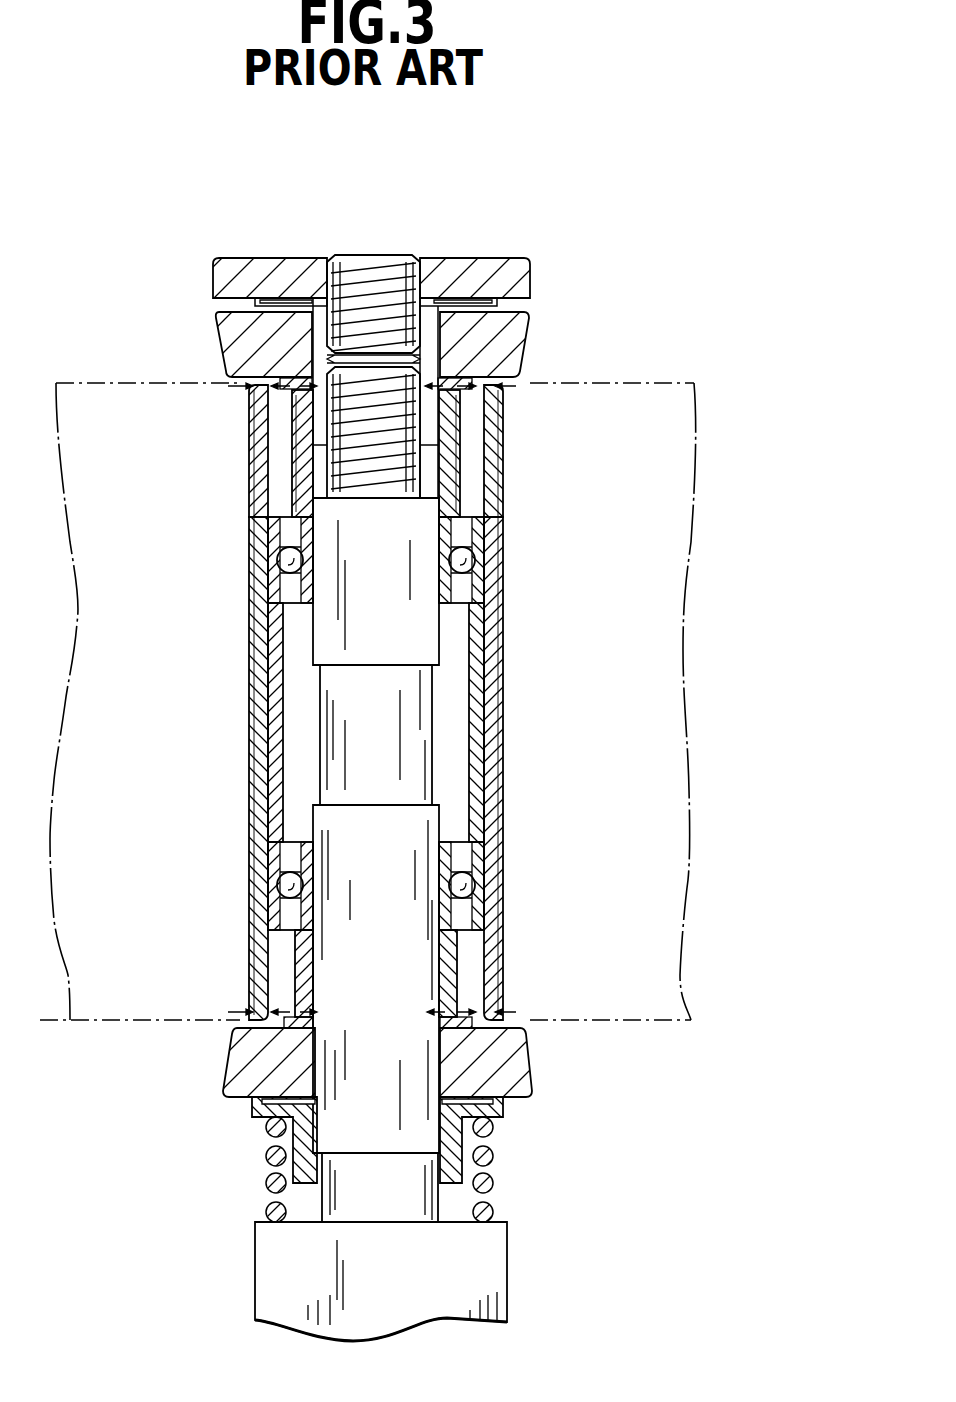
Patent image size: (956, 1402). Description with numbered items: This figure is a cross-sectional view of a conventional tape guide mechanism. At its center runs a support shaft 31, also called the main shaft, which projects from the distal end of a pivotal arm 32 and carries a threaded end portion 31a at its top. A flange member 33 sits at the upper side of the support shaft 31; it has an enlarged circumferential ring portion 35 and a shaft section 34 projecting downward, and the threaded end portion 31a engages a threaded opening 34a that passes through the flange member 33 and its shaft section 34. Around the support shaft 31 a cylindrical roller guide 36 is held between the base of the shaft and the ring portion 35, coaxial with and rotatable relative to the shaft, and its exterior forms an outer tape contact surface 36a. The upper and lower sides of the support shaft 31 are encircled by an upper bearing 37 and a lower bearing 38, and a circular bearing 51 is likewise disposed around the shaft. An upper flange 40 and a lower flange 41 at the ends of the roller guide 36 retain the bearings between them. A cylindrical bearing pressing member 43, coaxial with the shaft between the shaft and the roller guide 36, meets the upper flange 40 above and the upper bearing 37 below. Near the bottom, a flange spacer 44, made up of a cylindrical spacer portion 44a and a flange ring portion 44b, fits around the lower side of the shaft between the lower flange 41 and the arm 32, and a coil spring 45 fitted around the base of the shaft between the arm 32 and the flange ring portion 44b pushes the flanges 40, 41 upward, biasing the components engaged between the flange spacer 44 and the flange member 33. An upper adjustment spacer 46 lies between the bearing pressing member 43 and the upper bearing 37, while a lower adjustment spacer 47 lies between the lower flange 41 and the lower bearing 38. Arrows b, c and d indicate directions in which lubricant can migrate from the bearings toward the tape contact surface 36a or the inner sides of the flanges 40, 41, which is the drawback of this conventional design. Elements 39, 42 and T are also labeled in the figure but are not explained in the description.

The support shaft 31 is at (410, 718).
The threaded end portion 31a is at (413, 450).
The pivotal arm 32 is at (265, 1268).
The flange member 33 is at (552, 280).
The shaft section 34 is at (512, 347).
The threaded opening 34a is at (295, 350).
The enlarged circumferential ring portion 35 is at (458, 267).
The cylindrical roller guide 36 is at (540, 804).
The outer tape contact surface 36a is at (250, 692).
The upper bearing 37 is at (483, 577).
The lower bearing 38 is at (275, 868).
The bearing holder tube 39 is at (272, 634).
The upper flange 40 is at (222, 328).
The lower flange 41 is at (240, 1062).
The lock nut 42 is at (372, 274).
The cylindrical bearing pressing member 43 is at (303, 475).
The flange spacer 44 is at (490, 1167).
The cylindrical spacer portion 44a is at (297, 1138).
The flange ring portion 44b is at (487, 1110).
The coil spring 45 is at (266, 1183).
The upper adjustment spacer 46 is at (515, 386).
The lower adjustment spacer 47 is at (460, 1035).
The circular bearing 51 is at (453, 968).
The table T is at (655, 383).
The lubricant movement arrow b is at (250, 437).
The lubricant movement arrow c is at (313, 519).
The lubricant movement arrow d is at (300, 500).